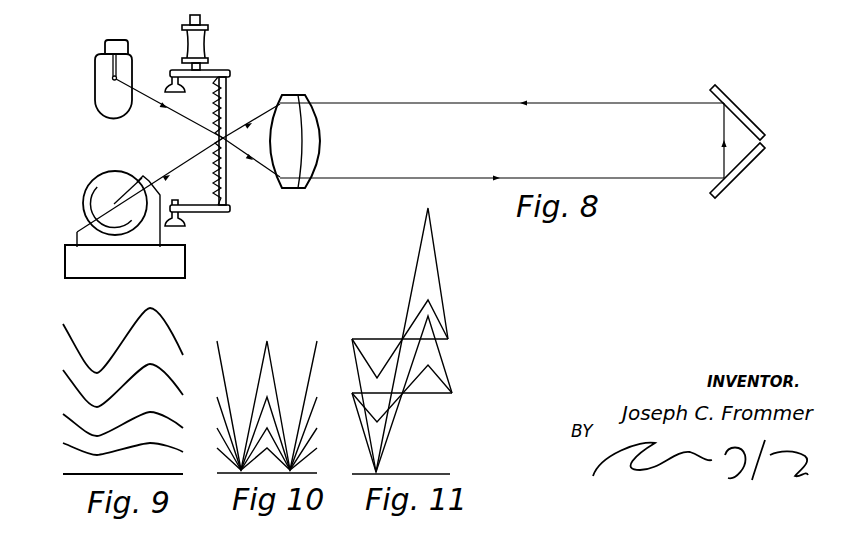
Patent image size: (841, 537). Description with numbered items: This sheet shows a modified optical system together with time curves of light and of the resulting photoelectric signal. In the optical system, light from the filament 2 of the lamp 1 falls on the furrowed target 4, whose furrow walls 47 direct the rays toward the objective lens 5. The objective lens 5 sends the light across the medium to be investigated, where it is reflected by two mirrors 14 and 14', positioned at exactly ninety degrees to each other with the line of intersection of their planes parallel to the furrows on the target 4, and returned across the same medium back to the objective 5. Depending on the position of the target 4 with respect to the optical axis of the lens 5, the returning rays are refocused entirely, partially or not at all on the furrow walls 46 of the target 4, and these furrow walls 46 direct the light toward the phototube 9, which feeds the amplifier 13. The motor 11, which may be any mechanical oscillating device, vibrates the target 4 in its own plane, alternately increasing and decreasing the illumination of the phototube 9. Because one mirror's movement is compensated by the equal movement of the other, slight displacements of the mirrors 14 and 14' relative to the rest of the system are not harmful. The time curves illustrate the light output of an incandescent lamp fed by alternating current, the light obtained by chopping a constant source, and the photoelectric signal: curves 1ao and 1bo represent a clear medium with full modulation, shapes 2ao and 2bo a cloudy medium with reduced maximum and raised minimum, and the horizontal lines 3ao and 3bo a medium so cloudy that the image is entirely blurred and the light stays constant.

In FIG. 8, the lamp 1 is at (96, 107).
In FIG. 8, the filament 2 is at (112, 75).
In FIG. 8, the target 4 is at (226, 88).
In FIG. 8, the objective lens 5 is at (300, 93).
In FIG. 8, the phototube 9 is at (114, 168).
In FIG. 8, the motor 11 is at (209, 40).
In FIG. 8, the amplifier 13 is at (186, 252).
In FIG. 8, the mirror 14 is at (721, 111).
In FIG. 8, the mirror 14' is at (721, 172).
In FIG. 8, the furrow walls 46 is at (212, 178).
In FIG. 8, the furrow walls 47 is at (212, 97).
In FIG. 11, the curve 1ao is at (441, 289).
In FIG. 11, the signal shape 2ao is at (434, 308).
In FIG. 11, the horizontal line 3ao is at (448, 339).
In FIG. 11, the curve 1bo is at (443, 353).
In FIG. 11, the signal shape 2bo is at (440, 372).
In FIG. 11, the horizontal line 3bo is at (452, 393).